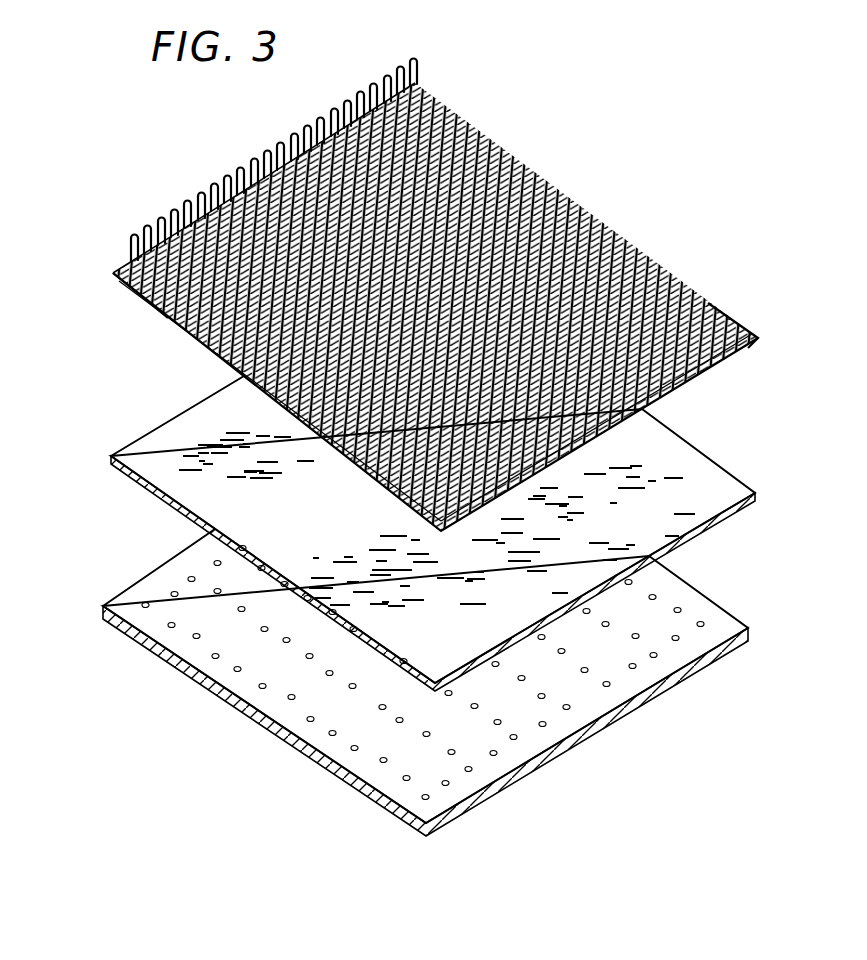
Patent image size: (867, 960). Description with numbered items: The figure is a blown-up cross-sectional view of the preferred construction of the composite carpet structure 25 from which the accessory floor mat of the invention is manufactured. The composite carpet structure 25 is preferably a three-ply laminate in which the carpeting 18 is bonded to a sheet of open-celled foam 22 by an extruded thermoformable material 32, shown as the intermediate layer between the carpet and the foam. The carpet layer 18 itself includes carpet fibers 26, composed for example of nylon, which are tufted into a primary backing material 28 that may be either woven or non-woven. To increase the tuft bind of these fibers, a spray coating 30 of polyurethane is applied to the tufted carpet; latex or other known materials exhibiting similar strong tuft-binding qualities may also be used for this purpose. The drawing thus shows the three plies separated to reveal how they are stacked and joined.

The carpeting 18 is at (425, 295).
The sheet of open-celled foam 22 is at (685, 597).
The composite carpet structure 25 is at (115, 712).
The carpet fibers 26 is at (120, 236).
The primary backing material 28 is at (735, 320).
The spray coating 30 is at (163, 313).
The extruded thermoformable material 32 is at (693, 473).